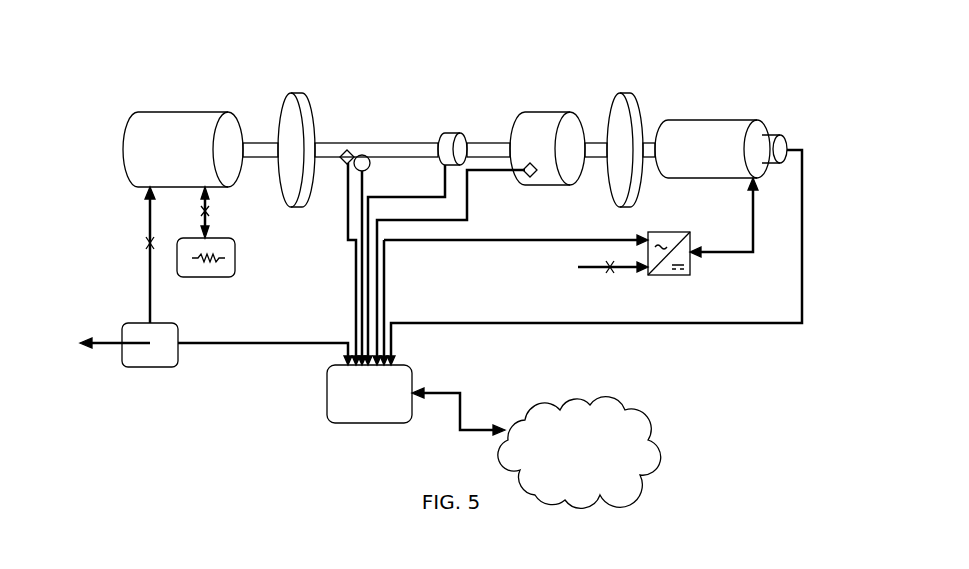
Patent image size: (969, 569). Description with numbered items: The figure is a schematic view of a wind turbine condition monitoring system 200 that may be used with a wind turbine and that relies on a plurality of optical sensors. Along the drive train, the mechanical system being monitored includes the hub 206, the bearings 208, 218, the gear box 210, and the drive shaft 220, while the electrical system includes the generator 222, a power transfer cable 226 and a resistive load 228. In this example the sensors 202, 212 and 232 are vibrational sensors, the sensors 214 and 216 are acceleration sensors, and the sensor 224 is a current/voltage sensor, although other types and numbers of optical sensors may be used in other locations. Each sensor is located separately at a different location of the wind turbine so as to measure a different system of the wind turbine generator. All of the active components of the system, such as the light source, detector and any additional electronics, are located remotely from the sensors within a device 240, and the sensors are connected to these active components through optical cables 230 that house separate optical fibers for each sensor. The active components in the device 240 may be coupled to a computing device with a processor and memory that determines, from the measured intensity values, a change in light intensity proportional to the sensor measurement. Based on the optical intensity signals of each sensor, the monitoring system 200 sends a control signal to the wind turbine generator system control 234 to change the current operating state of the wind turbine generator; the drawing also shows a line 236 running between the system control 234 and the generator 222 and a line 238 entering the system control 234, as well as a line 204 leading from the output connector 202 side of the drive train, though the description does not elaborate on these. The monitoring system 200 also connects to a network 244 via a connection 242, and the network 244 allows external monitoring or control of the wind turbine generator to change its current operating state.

The wind turbine condition monitoring system 200 is at (106, 88).
The vibrational sensor 202 is at (793, 137).
The output signal line 204 is at (803, 257).
The hub 206 is at (727, 120).
The bearing 208 is at (623, 92).
The gear box 210 is at (545, 112).
The vibrational sensor 212 is at (452, 133).
The acceleration sensor 214 is at (366, 156).
The acceleration sensor 216 is at (346, 150).
The bearing 218 is at (290, 92).
The drive shaft 220 is at (265, 146).
The generator 222 is at (191, 111).
The current/voltage sensor 224 is at (128, 320).
The power transfer cable 226 is at (80, 338).
The resistive load 228 is at (237, 257).
The optical cables 230 is at (356, 292).
The vibrational sensor 232 is at (526, 176).
The wind turbine generator system control 234 is at (660, 232).
The generator control line 236 is at (748, 257).
The power line 238 is at (570, 267).
The device 240 is at (325, 408).
The connection 242 is at (475, 406).
The network 244 is at (607, 403).